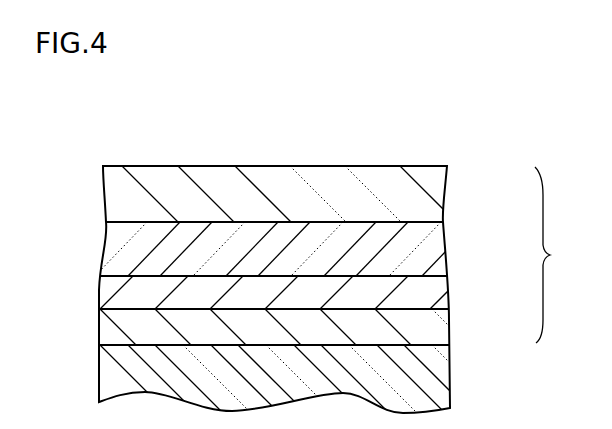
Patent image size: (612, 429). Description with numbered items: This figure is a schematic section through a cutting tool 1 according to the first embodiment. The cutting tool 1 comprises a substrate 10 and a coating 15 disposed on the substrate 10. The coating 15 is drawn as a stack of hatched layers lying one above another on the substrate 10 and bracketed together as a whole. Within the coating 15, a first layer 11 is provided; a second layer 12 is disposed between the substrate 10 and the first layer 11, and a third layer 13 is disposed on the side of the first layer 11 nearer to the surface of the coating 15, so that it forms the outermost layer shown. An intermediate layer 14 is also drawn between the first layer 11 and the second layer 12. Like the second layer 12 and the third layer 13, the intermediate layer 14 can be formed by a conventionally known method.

The cutting tool 1 is at (443, 148).
The substrate 10 is at (432, 380).
The first layer 11 is at (432, 250).
The second layer 12 is at (432, 335).
The third layer 13 is at (431, 197).
The intermediate layer 14 is at (432, 295).
The coating 15 is at (560, 255).